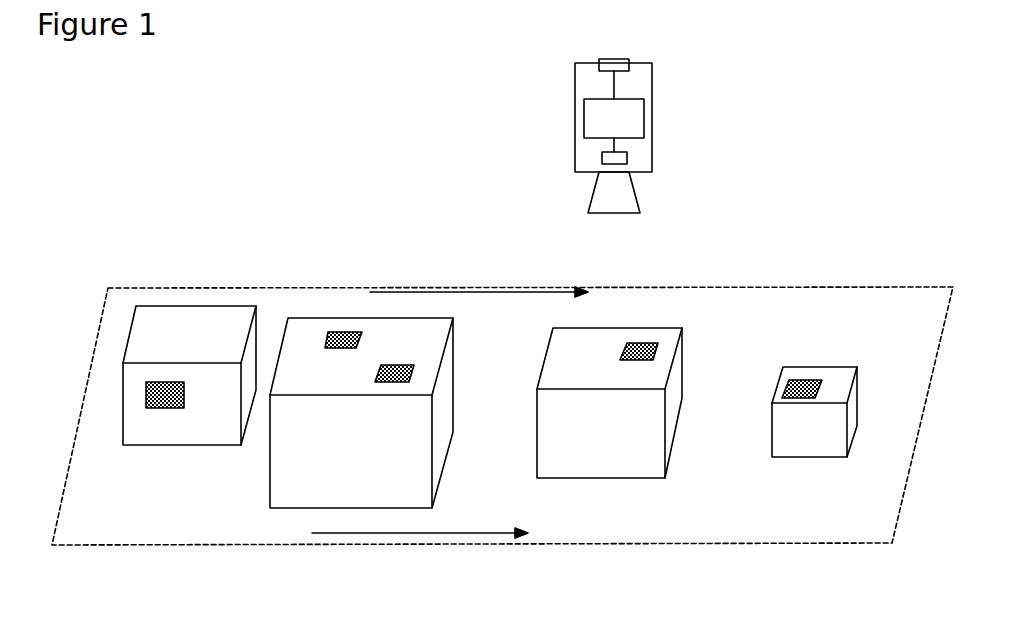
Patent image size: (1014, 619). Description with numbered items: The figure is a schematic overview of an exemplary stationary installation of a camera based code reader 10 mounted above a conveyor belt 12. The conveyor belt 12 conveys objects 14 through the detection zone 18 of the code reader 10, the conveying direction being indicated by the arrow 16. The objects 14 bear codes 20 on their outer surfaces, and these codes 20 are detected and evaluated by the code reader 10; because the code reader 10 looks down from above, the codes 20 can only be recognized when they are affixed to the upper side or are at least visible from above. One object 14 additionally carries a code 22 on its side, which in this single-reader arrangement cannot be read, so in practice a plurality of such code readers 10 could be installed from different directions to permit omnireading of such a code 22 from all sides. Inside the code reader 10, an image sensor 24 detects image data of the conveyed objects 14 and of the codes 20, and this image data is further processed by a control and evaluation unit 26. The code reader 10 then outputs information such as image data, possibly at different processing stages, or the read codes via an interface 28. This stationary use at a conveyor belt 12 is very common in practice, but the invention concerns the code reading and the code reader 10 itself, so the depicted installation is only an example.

The code reader 10 is at (652, 63).
The conveyor belt 12 is at (860, 547).
The objects 14 is at (285, 486).
The arrow 16 is at (398, 537).
The detection zone 18 is at (652, 275).
The codes 20 is at (388, 365).
The code 22 is at (155, 395).
The image sensor 24 is at (603, 160).
The control and evaluation unit 26 is at (638, 140).
The interface 28 is at (612, 63).